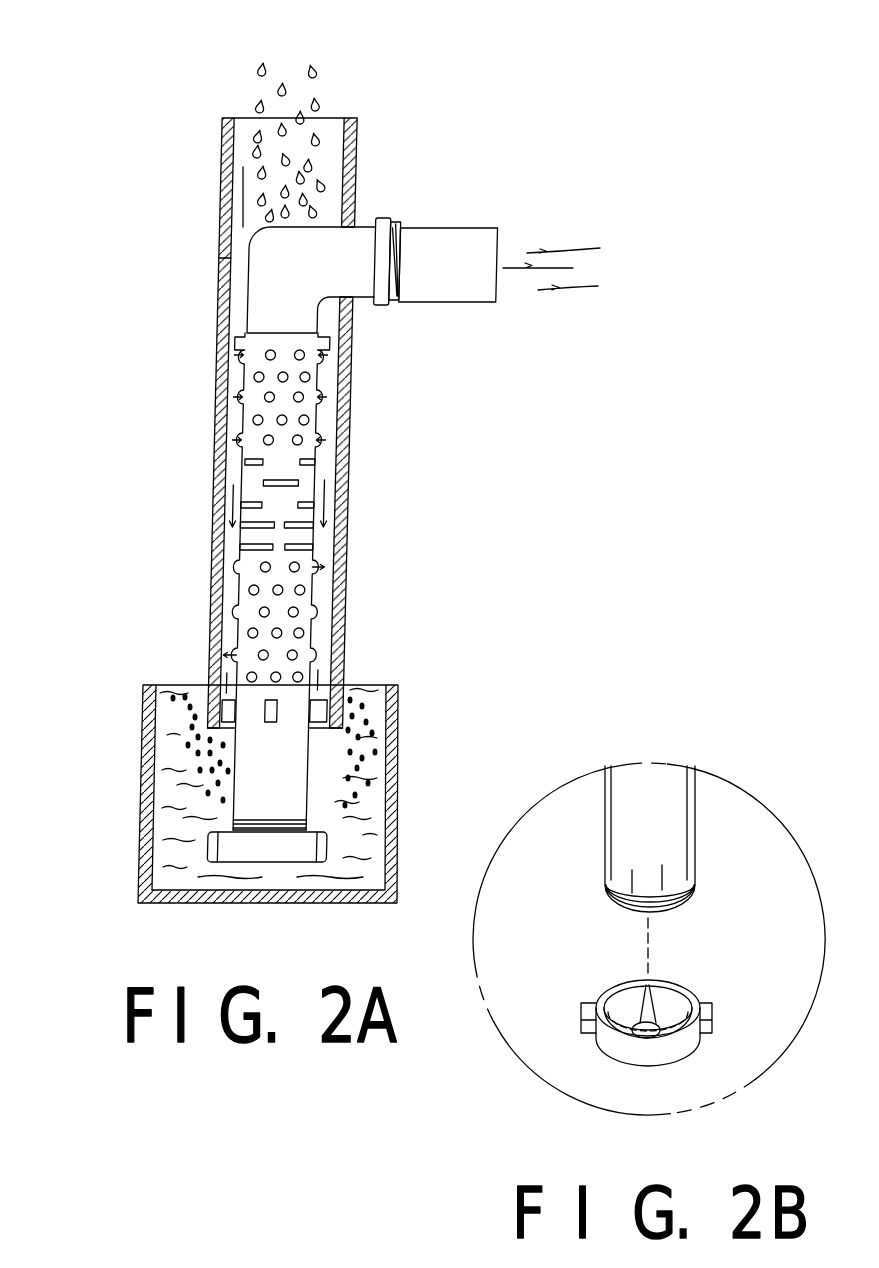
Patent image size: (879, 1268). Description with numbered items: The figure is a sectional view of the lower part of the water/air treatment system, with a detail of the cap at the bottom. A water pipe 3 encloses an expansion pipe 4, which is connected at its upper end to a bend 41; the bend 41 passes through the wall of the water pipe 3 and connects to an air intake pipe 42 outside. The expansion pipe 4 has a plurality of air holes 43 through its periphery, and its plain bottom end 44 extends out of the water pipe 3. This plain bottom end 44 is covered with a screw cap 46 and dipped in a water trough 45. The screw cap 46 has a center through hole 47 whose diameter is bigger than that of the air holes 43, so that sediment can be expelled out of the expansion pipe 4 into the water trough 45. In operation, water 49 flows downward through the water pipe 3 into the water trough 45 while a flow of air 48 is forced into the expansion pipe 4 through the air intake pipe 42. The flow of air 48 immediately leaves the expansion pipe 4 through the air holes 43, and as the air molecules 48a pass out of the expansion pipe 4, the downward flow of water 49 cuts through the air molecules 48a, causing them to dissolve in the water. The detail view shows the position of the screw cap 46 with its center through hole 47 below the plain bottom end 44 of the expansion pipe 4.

In FIG. 2A, the water pipe 3 is at (216, 358).
In FIG. 2A, the expansion pipe 4 is at (310, 553).
In FIG. 2B, the expansion pipe 4 is at (628, 865).
In FIG. 2A, the bend 41 is at (265, 287).
In FIG. 2A, the air intake pipe 42 is at (460, 240).
In FIG. 2A, the air holes 43 is at (255, 589).
In FIG. 2A, the plain bottom end 44 is at (293, 750).
In FIG. 2A, the water trough 45 is at (146, 793).
In FIG. 2A, the screw cap 46 is at (267, 847).
In FIG. 2B, the screw cap 46 is at (600, 995).
In FIG. 2B, the center through hole 47 is at (675, 988).
In FIG. 2A, the flow of air 48 is at (587, 287).
In FIG. 2A, the air molecules 48a is at (239, 401).
In FIG. 2A, the water 49 is at (283, 98).